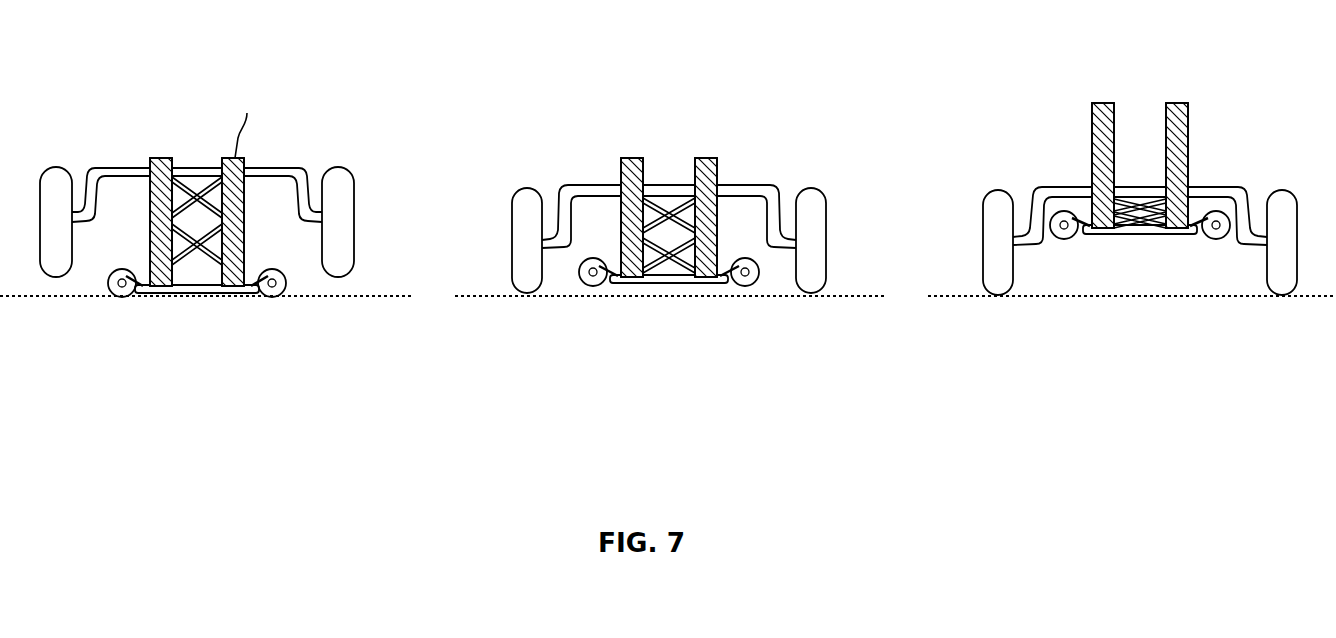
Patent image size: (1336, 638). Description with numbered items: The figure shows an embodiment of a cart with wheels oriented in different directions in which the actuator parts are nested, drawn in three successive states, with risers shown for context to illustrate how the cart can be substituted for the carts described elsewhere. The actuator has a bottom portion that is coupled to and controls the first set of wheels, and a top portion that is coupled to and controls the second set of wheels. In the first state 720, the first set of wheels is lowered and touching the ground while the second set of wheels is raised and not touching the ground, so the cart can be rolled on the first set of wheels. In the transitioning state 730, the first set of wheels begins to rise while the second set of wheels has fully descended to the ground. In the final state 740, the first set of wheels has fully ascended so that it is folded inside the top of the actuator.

The first state of cart 720 is at (77, 117).
The transitioning state of cart 730 is at (547, 117).
The final state of cart 740 is at (1034, 115).